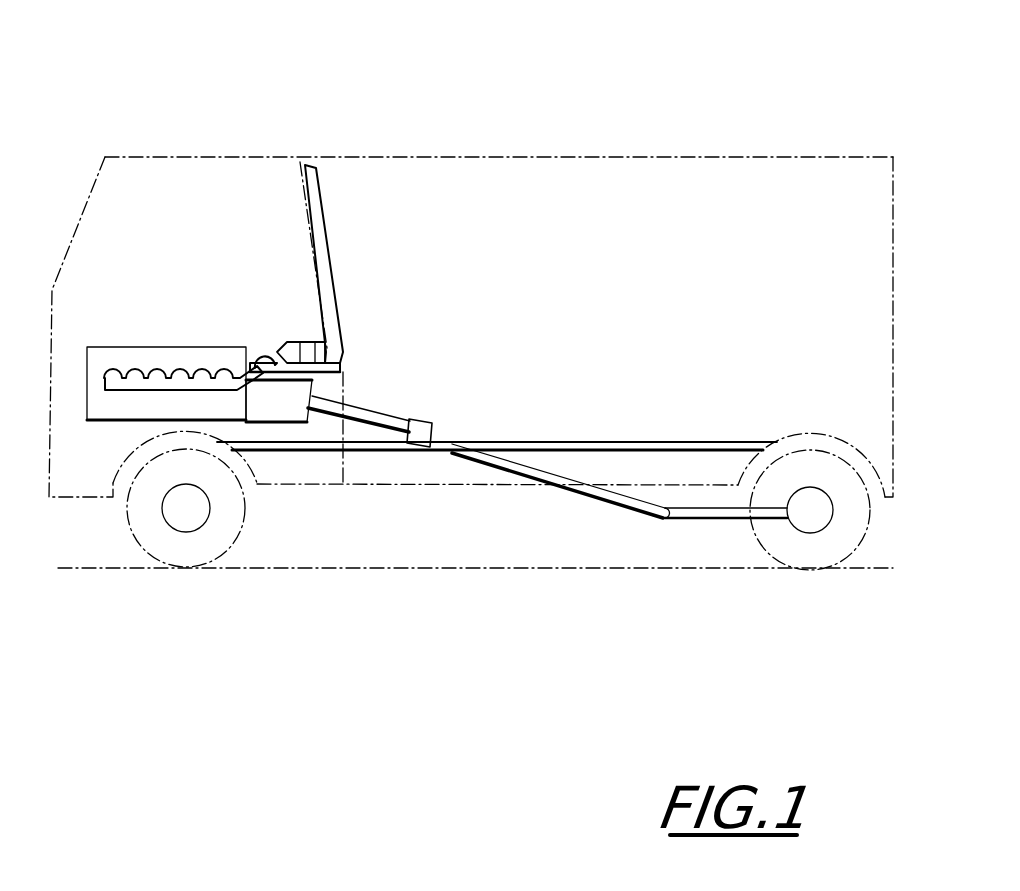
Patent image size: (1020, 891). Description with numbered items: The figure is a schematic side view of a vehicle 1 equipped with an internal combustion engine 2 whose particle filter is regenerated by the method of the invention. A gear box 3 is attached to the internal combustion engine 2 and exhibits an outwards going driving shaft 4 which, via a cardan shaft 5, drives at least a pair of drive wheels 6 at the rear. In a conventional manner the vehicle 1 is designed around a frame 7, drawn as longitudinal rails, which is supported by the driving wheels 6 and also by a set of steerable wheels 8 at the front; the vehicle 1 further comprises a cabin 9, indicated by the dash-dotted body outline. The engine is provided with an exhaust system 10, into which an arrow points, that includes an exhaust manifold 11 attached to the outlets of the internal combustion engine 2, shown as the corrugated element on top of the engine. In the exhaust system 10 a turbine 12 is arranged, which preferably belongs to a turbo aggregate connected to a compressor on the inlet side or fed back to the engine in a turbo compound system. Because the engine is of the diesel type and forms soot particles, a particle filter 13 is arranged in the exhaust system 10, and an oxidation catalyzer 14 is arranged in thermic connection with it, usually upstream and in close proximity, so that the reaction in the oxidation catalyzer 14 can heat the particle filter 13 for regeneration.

The vehicle 1 is at (569, 110).
The internal combustion engine 2 is at (108, 412).
The gear box 3 is at (287, 408).
The driving shaft 4 is at (372, 418).
The cardan shaft 5 is at (587, 485).
The drive wheels 6 is at (803, 527).
The frame 7 is at (647, 445).
The steerable wheels 8 is at (197, 487).
The cabin 9 is at (112, 253).
The exhaust system 10 is at (217, 296).
The exhaust manifold 11 is at (105, 373).
The turbine 12 is at (262, 353).
The particle filter 13 is at (314, 290).
The oxidation catalyzer 14 is at (292, 336).